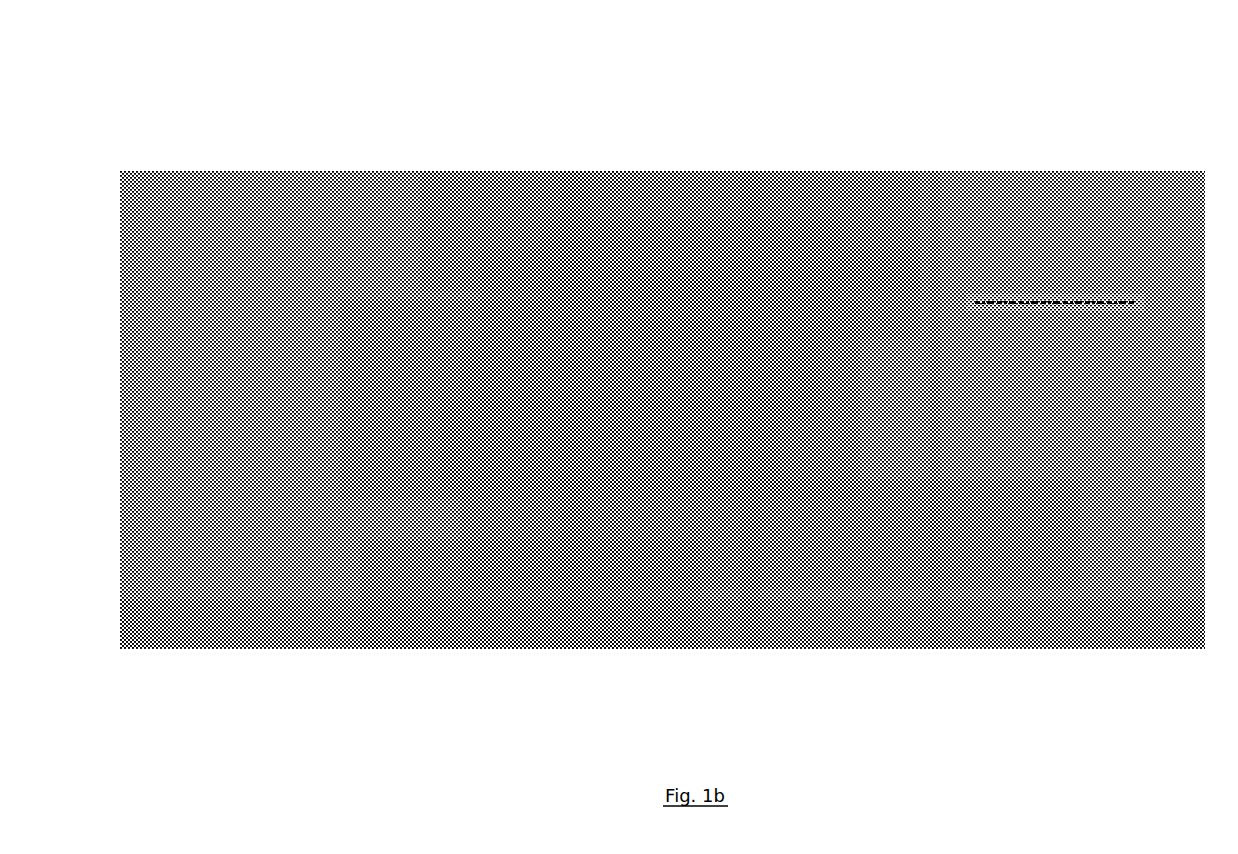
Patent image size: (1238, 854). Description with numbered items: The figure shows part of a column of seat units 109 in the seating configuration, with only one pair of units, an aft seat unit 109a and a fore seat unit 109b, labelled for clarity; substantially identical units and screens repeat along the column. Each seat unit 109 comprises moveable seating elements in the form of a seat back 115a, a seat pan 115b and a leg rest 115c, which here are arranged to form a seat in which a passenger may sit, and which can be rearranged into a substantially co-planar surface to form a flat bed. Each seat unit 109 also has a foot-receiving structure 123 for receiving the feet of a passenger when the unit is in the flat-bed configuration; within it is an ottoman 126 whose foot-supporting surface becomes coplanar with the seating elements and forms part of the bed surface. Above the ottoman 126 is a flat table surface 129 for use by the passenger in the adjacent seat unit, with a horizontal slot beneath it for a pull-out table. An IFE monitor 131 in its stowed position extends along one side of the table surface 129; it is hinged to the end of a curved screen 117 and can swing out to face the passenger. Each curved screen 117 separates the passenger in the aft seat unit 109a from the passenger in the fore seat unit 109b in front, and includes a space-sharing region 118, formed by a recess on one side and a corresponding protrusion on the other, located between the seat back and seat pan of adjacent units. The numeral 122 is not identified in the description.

The seat unit 109 is at (447, 144).
The aft seat unit 109a is at (797, 154).
The fore seat unit 109b is at (607, 148).
The curved screen 117 is at (490, 229).
The space-sharing region 118 is at (676, 330).
The seat back 115a is at (580, 276).
The seat pan 115b is at (515, 389).
The leg rest 115c is at (465, 446).
The headrest 122 is at (495, 288).
The IFE monitor 131 is at (369, 364).
The table surface 129 is at (539, 525).
The ottoman 126 is at (387, 578).
The foot-receiving structure 123 is at (356, 658).